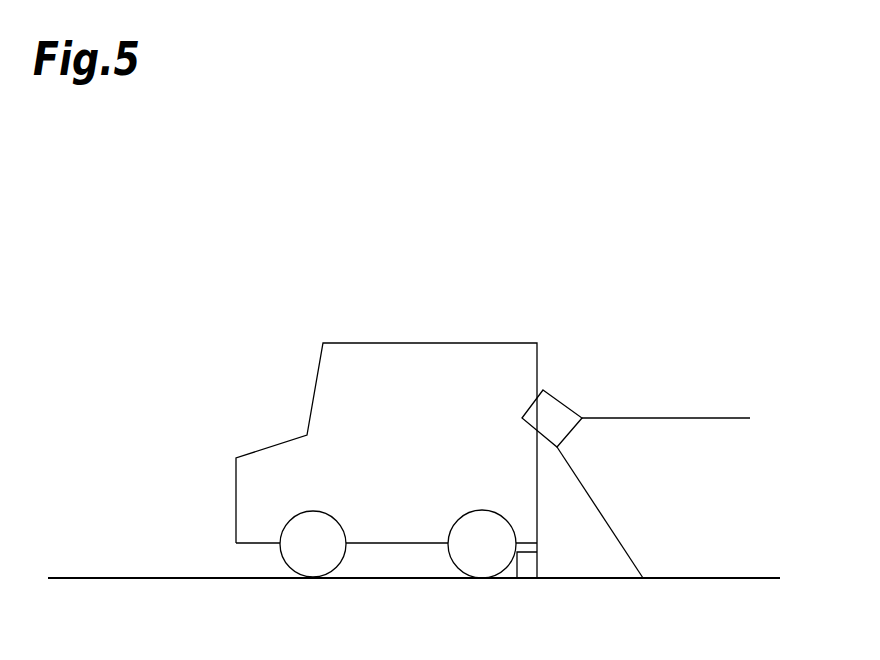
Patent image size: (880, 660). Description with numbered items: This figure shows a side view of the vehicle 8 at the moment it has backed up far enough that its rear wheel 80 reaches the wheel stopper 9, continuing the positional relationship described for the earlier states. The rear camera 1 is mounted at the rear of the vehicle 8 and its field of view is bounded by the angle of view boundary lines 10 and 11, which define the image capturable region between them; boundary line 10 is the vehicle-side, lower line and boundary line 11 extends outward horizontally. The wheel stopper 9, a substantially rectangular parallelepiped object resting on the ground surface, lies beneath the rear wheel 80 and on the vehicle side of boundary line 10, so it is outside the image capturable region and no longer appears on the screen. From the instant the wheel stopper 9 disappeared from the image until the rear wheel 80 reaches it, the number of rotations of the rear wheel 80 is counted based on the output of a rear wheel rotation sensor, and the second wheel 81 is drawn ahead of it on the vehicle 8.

The rear camera 1 is at (557, 410).
The vehicle 8 is at (440, 350).
The wheel stopper 9 is at (527, 563).
The angle of view boundary line 10 is at (598, 497).
The angle of view boundary line 11 is at (717, 419).
The rear wheel 80 is at (485, 567).
The rear wheel 81 is at (316, 566).